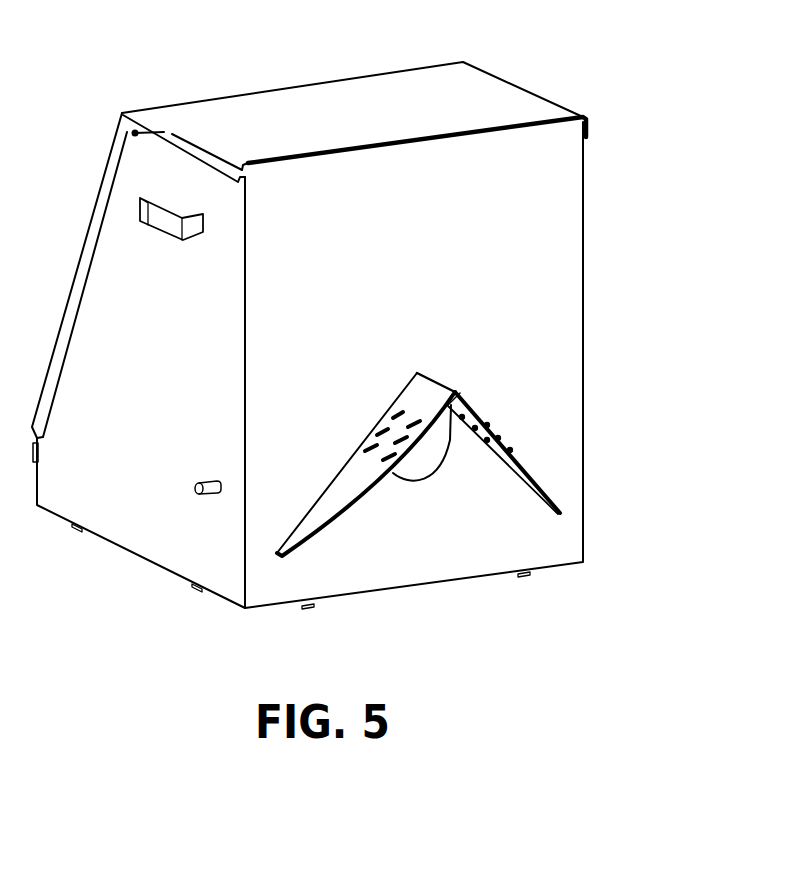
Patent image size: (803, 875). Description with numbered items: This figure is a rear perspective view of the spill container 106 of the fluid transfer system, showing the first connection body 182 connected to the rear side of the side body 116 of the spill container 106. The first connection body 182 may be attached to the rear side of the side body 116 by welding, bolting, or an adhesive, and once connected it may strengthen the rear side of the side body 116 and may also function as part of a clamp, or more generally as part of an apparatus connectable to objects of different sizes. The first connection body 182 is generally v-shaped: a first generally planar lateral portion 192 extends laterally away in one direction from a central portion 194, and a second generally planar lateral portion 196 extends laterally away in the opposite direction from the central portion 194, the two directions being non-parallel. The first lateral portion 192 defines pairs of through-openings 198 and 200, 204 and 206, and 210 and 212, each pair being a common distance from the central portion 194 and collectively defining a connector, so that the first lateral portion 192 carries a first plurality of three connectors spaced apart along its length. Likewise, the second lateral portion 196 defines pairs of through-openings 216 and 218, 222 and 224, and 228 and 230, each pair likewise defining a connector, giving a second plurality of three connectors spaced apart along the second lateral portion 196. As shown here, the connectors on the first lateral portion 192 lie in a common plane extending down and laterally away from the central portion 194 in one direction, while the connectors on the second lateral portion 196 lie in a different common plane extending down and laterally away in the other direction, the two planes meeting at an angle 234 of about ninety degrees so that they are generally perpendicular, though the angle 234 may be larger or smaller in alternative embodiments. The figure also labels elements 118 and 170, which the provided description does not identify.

The spill container 106 is at (645, 101).
The side body 116 is at (555, 244).
The top panel 118 is at (325, 102).
The mounting bracket 170 is at (410, 466).
The first connection body 182 is at (548, 486).
The first lateral portion 192 is at (343, 517).
The central portion 194 is at (427, 374).
The second lateral portion 196 is at (537, 501).
The through-opening 198 is at (380, 463).
The through-opening 200 is at (363, 453).
The through-opening 204 is at (400, 403).
The through-opening 206 is at (378, 418).
The through-opening 210 is at (420, 412).
The through-opening 212 is at (403, 427).
The through-opening 216 is at (492, 415).
The through-opening 218 is at (453, 428).
The through-opening 222 is at (505, 430).
The through-opening 224 is at (468, 438).
The through-opening 228 is at (518, 442).
The through-opening 230 is at (482, 449).
The angle 234 is at (464, 403).